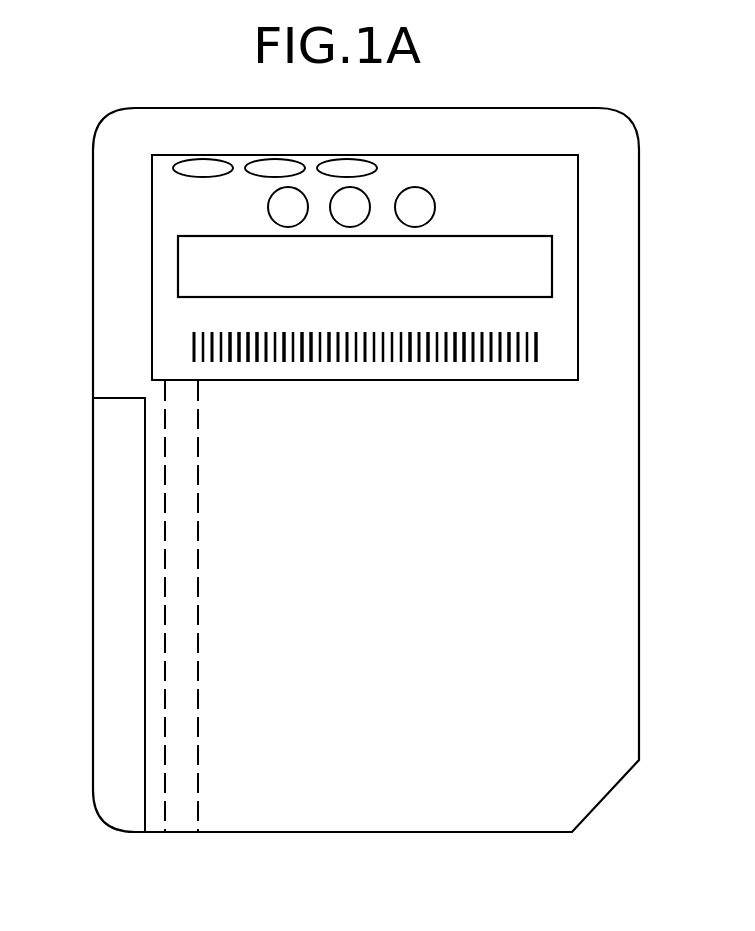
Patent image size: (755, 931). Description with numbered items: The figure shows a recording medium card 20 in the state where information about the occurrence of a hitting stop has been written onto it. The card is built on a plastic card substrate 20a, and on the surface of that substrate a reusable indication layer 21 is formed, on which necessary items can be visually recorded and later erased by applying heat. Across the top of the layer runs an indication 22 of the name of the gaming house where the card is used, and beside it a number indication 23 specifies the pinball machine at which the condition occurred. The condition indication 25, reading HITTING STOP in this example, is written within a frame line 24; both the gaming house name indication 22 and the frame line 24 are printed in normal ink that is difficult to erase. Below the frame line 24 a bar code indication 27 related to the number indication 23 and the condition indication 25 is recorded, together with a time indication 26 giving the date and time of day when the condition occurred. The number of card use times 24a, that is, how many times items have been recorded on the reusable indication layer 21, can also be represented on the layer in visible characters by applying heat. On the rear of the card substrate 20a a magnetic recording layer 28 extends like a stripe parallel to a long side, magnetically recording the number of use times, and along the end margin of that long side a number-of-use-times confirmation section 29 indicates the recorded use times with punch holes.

The recording medium card 20 is at (530, 88).
The plastic card substrate 20a is at (702, 151).
The reusable indication layer 21 is at (152, 156).
The indication of the name of a gaming house 22 is at (370, 168).
The number indication 23 is at (180, 198).
The frame line 24 is at (178, 283).
The number of card use times 24a is at (506, 192).
The condition indication 25 is at (547, 255).
The time indication 26 is at (178, 330).
The bar code indication 27 is at (358, 342).
The magnetic recording layer 28 is at (200, 783).
The number-of-use-times confirmation section 29 is at (140, 812).